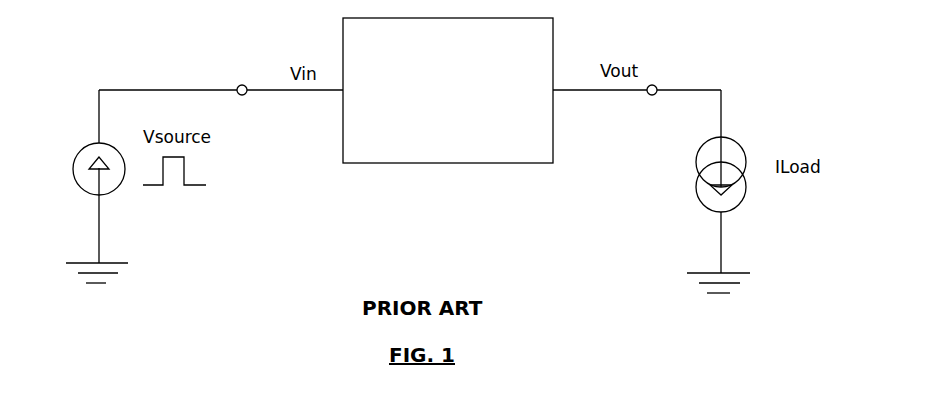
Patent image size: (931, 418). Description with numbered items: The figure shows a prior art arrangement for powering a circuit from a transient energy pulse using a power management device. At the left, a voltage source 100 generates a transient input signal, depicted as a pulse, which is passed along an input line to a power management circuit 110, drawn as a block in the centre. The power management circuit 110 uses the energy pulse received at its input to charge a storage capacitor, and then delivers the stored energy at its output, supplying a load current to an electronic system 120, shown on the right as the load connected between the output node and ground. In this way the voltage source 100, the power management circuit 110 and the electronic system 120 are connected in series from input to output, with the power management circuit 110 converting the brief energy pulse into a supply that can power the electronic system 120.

The voltage source 100 is at (75, 186).
The power management circuit 110 is at (448, 90).
The electronic system 120 is at (696, 191).